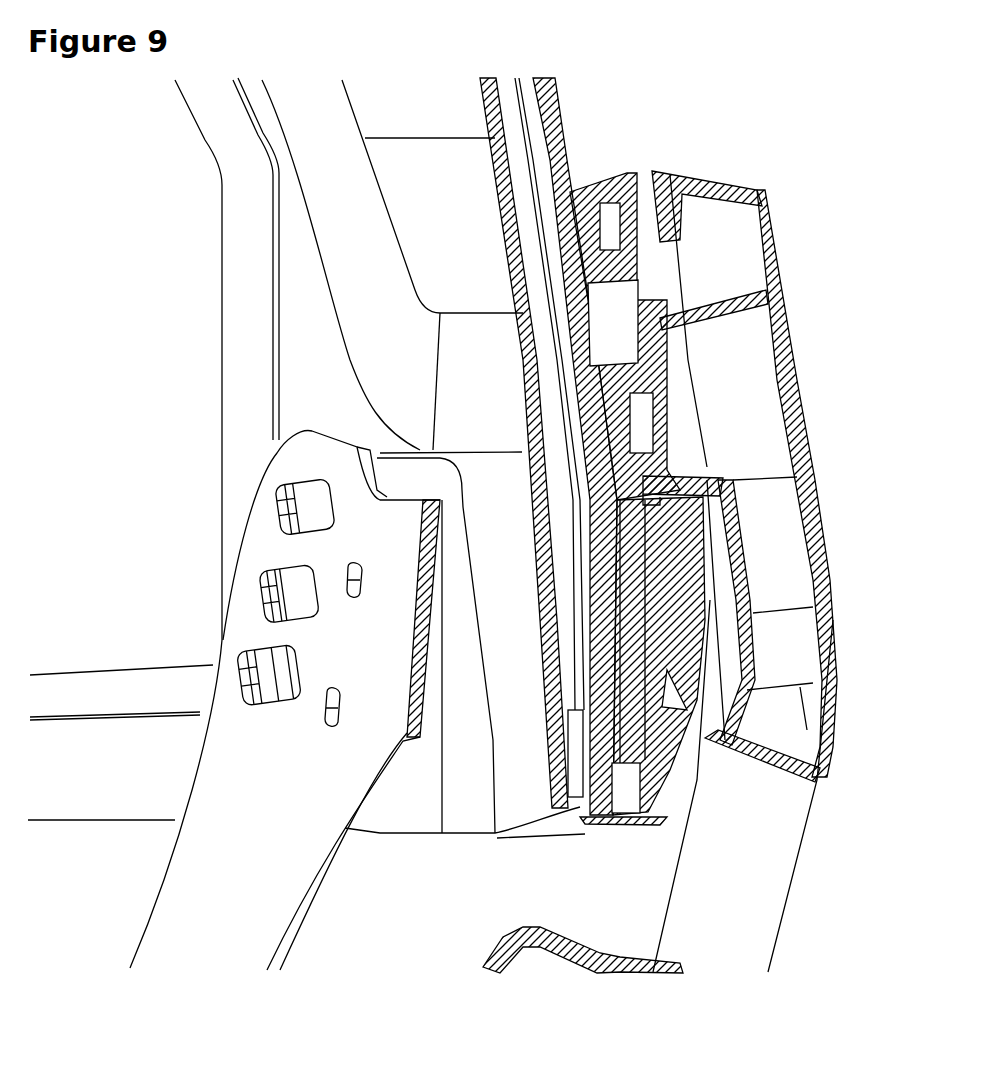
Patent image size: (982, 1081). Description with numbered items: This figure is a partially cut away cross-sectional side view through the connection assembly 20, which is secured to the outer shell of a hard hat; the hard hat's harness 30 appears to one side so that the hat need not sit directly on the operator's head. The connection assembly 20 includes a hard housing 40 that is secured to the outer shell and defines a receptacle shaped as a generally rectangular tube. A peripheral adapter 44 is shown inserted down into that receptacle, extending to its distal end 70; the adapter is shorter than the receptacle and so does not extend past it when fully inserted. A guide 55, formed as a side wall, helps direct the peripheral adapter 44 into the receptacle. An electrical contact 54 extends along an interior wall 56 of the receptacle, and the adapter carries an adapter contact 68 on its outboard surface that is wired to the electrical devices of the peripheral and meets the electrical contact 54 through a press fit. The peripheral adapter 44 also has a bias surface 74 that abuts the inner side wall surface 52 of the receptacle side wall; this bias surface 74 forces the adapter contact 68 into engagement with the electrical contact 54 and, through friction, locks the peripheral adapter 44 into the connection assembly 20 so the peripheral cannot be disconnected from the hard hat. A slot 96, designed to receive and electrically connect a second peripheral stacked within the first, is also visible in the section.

The connection assembly 20 is at (612, 833).
The harness 30 is at (163, 877).
The housing 40 is at (705, 570).
The peripheral adapter 44 is at (643, 620).
The inner side wall surface 52 is at (628, 462).
The electrical contact 54 is at (627, 593).
The guide 55 is at (627, 790).
The interior wall 56 is at (612, 522).
The adapter contact 68 is at (623, 594).
The distal end 70 is at (628, 763).
The bias surface 74 is at (733, 490).
The slot 96 is at (645, 140).